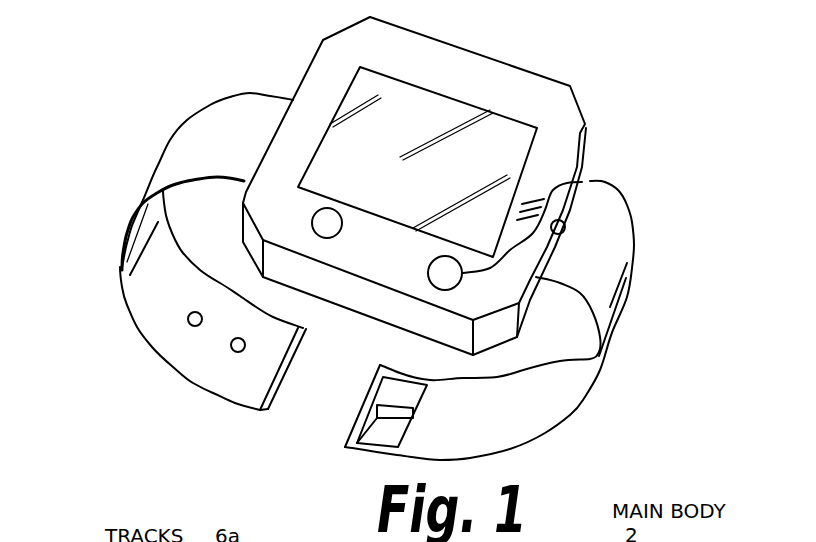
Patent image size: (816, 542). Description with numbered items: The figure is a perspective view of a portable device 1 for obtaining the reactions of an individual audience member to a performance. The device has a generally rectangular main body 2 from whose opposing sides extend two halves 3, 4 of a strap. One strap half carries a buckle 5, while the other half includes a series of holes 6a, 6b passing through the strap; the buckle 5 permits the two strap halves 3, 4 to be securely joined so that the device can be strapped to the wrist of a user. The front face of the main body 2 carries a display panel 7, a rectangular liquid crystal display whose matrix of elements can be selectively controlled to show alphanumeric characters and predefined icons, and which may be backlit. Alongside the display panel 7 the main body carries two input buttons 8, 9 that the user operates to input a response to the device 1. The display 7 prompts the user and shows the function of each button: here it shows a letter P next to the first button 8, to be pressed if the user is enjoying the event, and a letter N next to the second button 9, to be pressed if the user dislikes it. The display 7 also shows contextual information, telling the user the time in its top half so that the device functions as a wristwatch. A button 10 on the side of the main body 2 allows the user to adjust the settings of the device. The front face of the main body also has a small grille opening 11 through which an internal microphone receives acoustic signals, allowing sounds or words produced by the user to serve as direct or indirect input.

The portable device 1 is at (372, 255).
The main body 2 is at (418, 184).
The strap half 3 is at (179, 258).
The strap half 4 is at (471, 339).
The buckle 5 is at (357, 443).
The hole 6a is at (189, 325).
The hole 6b is at (233, 350).
The display panel 7 is at (493, 118).
The input button 8 is at (312, 208).
The input button 9 is at (590, 181).
The button 10 is at (566, 223).
The grille opening 11 is at (535, 202).